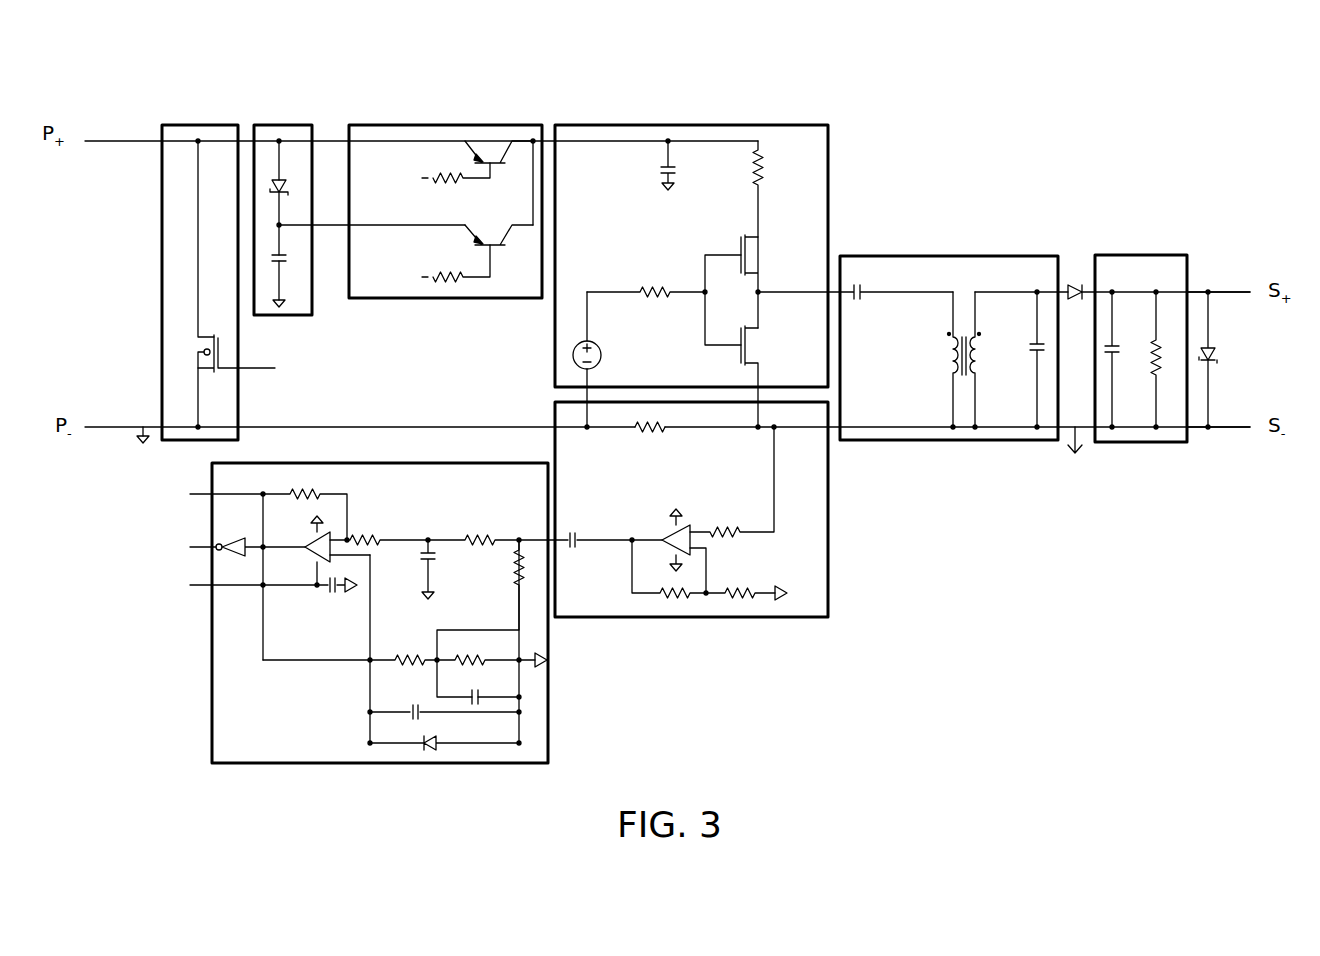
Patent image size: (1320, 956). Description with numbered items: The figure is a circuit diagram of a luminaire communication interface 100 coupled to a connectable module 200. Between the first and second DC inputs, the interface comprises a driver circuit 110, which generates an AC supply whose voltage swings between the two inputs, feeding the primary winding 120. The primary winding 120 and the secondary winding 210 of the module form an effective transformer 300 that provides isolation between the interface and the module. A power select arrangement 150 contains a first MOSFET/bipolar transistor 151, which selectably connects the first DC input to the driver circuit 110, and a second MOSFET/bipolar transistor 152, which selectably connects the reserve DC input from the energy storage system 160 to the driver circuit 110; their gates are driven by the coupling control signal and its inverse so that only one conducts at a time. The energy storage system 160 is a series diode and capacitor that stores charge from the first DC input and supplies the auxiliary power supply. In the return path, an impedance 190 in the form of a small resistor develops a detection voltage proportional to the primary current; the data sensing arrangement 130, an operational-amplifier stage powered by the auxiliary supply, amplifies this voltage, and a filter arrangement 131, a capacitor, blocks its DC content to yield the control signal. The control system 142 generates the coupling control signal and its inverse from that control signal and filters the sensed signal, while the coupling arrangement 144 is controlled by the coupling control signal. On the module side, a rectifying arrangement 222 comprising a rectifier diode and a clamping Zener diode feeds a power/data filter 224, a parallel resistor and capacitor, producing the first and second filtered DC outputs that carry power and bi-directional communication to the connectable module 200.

The communication interface 100 is at (124, 690).
The driver circuit 110 is at (765, 125).
The primary winding 120 is at (929, 349).
The data sensing arrangement 130 is at (716, 551).
The filter arrangement 131 is at (572, 556).
The control system 142 is at (548, 668).
The coupling arrangement 144 is at (208, 125).
The power select arrangement 150 is at (455, 166).
The first MOSFET/bipolar transistor 151 is at (497, 140).
The second MOSFET/bipolar transistor 152 is at (493, 218).
The energy storage system 160 is at (292, 125).
The impedance 190 is at (646, 445).
The connectable module 200 is at (1063, 580).
The secondary winding 210 is at (1000, 350).
The rectifying arrangement 222 is at (1237, 346).
The power/data filter 224 is at (1156, 255).
The effective transformer 300 is at (954, 333).